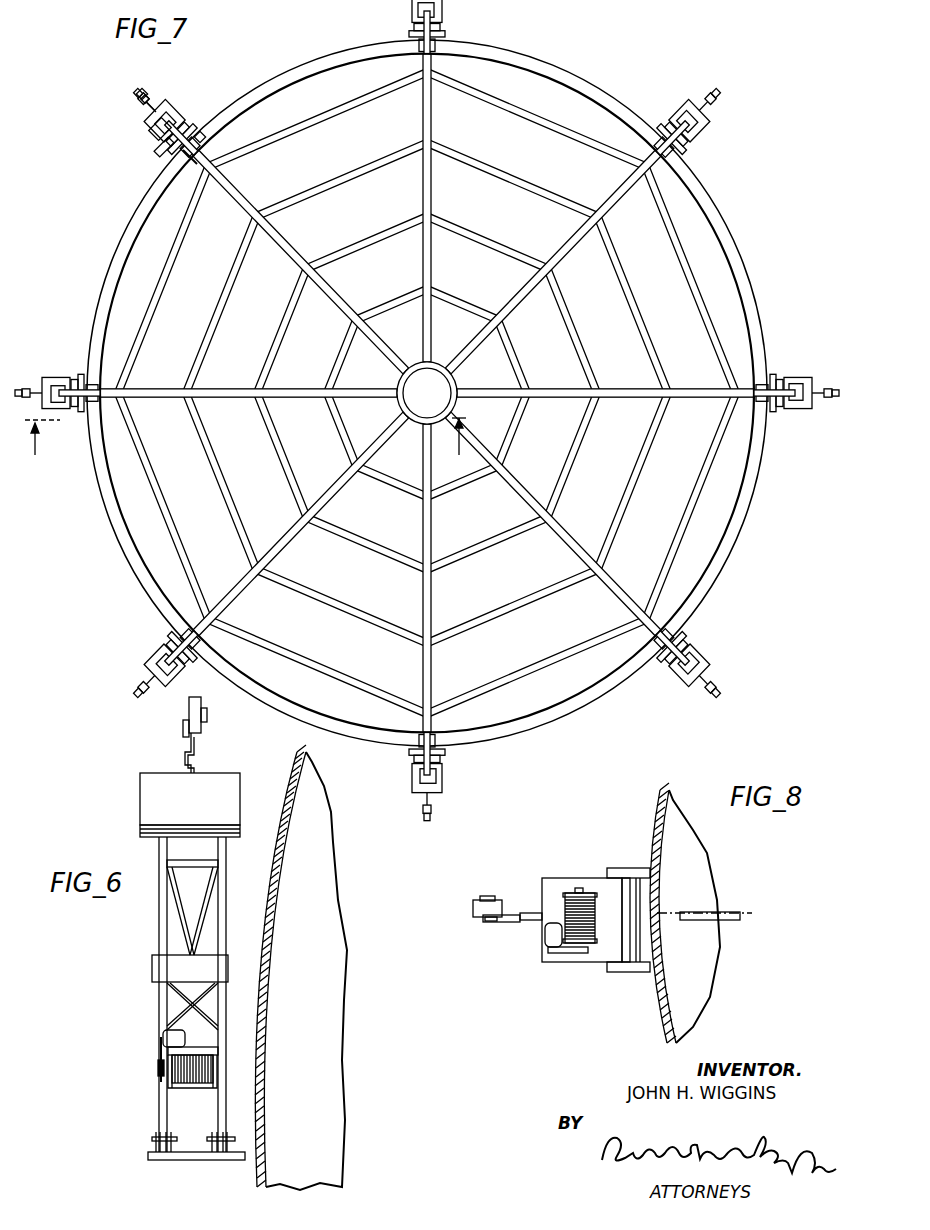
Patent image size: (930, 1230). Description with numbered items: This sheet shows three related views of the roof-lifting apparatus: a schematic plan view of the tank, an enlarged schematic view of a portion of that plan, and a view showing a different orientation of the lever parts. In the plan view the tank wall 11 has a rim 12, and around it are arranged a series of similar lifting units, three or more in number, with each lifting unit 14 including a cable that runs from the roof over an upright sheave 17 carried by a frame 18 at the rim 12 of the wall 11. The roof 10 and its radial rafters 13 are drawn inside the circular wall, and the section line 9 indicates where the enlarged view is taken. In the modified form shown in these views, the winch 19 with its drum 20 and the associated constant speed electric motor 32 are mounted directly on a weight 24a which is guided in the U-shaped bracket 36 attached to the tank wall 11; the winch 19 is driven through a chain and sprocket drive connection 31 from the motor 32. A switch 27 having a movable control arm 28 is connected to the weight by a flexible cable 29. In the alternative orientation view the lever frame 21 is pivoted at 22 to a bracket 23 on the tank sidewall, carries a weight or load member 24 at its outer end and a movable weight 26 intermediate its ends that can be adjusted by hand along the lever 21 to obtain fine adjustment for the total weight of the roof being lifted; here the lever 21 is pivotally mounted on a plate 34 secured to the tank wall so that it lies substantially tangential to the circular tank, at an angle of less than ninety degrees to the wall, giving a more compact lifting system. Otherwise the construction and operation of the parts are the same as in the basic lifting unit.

In FIG. 7, the section line 9 is at (245, 445).
In FIG. 7, the tank roof 10 is at (516, 229).
In FIG. 6, the tank roof 10 is at (316, 1039).
In FIG. 8, the tank roof 10 is at (703, 882).
In FIG. 6, the wall 11 is at (266, 903).
In FIG. 8, the wall 11 is at (670, 996).
In FIG. 7, the rim 12 is at (568, 78).
In FIG. 7, the radial rafter 13 is at (287, 250).
In FIG. 8, the radial rafter 13 is at (752, 913).
In FIG. 6, the lifting unit 14 is at (125, 929).
In FIG. 7, the upright sheave 17 is at (206, 140).
In FIG. 7, the frame 18 is at (190, 166).
In FIG. 7, the winch 19 is at (158, 132).
In FIG. 6, the winch 19 is at (166, 1080).
In FIG. 8, the winch 19 is at (577, 889).
In FIG. 6, the drum 20 is at (186, 1076).
In FIG. 8, the drum 20 is at (594, 906).
In FIG. 6, the lever frame 21 is at (159, 897).
In FIG. 6, the pivot 22 is at (151, 1138).
In FIG. 6, the bracket 23 is at (172, 1143).
In FIG. 6, the weight or load member 24 is at (147, 796).
In FIG. 7, the weight 24a is at (178, 114).
In FIG. 8, the weight 24a is at (550, 880).
In FIG. 6, the movable weight 26 is at (160, 968).
In FIG. 7, the switch 27 is at (143, 91).
In FIG. 6, the switch 27 is at (208, 715).
In FIG. 8, the switch 27 is at (473, 908).
In FIG. 7, the movable control arm 28 is at (140, 101).
In FIG. 6, the movable control arm 28 is at (183, 730).
In FIG. 8, the movable control arm 28 is at (490, 922).
In FIG. 7, the flexible cable 29 is at (150, 116).
In FIG. 6, the flexible cable 29 is at (186, 754).
In FIG. 8, the flexible cable 29 is at (512, 923).
In FIG. 6, the chain and sprocket drive connection 31 is at (160, 1050).
In FIG. 8, the chain and sprocket drive connection 31 is at (570, 954).
In FIG. 6, the constant speed electric motor 32 is at (170, 1037).
In FIG. 8, the constant speed electric motor 32 is at (546, 940).
In FIG. 6, the plate 34 is at (195, 1161).
In FIG. 7, the U-shaped bracket 36 is at (162, 150).
In FIG. 8, the U-shaped bracket 36 is at (612, 868).